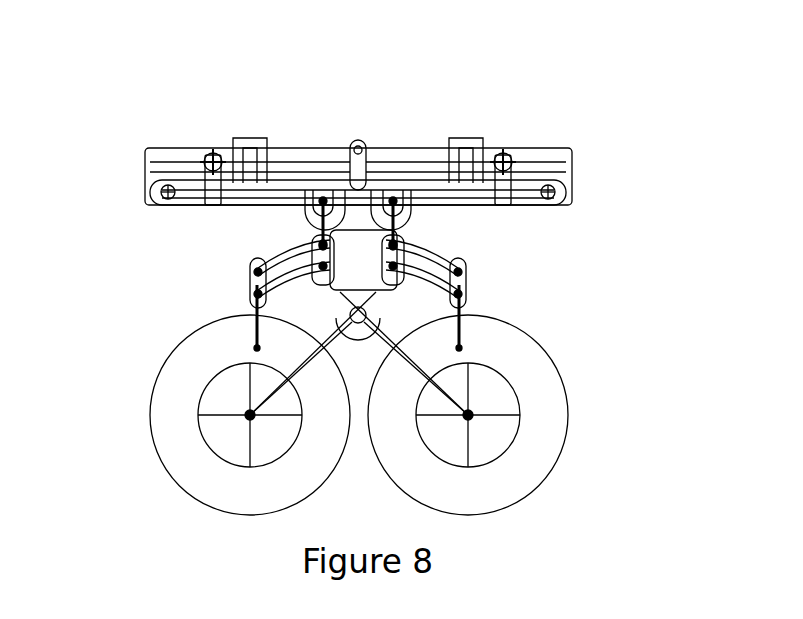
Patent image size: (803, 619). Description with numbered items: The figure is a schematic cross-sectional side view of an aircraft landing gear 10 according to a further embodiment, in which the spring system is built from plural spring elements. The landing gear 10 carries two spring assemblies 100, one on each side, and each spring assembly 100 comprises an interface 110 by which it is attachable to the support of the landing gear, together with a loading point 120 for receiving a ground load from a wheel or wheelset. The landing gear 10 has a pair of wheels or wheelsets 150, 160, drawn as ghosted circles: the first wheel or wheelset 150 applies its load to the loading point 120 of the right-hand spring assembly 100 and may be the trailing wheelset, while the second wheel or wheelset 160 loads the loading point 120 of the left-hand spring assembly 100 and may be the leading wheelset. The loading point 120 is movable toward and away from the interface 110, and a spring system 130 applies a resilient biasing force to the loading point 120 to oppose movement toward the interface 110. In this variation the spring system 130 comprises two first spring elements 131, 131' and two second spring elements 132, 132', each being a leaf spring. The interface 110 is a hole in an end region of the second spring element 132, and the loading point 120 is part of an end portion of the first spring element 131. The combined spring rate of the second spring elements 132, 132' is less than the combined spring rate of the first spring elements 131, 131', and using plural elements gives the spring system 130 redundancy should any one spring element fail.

The aircraft landing gear 10 is at (530, 68).
The spring assembly 100 is at (624, 196).
The interface 110 is at (145, 190).
The loading point 120 is at (243, 285).
The spring system 130 is at (177, 243).
The first spring element 131 is at (361, 237).
The first spring element 131' is at (358, 278).
The second spring element 132 is at (356, 147).
The second spring element 132' is at (358, 147).
The first wheel or wheelset 150 is at (566, 406).
The second wheel or wheelset 160 is at (152, 406).